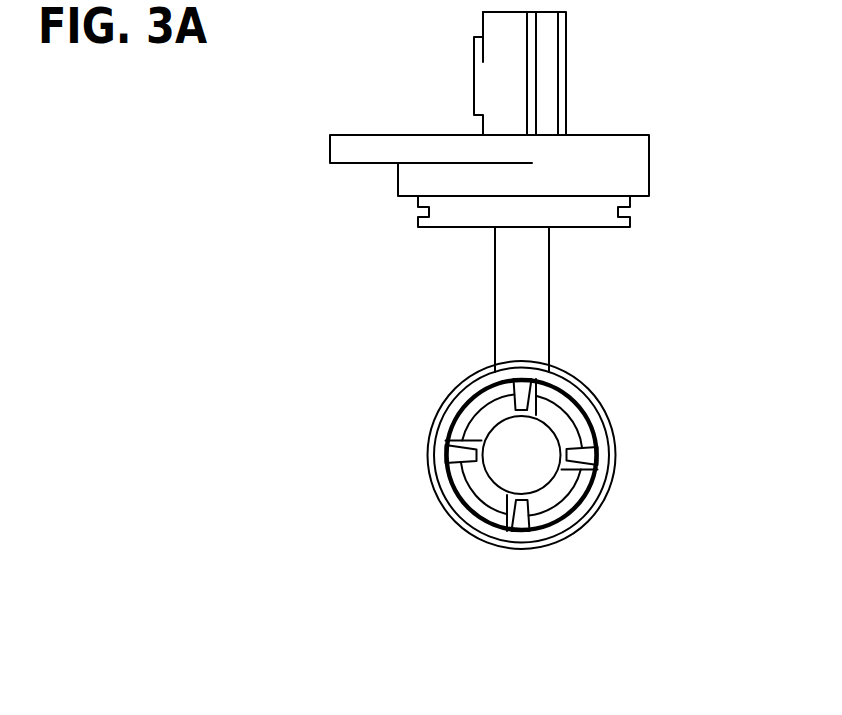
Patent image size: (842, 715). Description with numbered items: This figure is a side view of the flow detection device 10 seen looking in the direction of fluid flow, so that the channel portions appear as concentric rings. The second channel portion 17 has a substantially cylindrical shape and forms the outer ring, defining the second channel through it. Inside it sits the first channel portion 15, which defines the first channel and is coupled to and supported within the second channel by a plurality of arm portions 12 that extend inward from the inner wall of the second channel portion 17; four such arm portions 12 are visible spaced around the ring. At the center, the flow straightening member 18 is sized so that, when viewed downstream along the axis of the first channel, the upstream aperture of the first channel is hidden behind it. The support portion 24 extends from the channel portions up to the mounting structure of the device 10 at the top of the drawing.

The flow detection device 10 is at (622, 136).
The arm portions 12 is at (522, 392).
The first channel portion 15 is at (482, 492).
The second channel portion 17 is at (588, 390).
The flow straightening member 18 is at (543, 470).
The support portion 24 is at (549, 292).